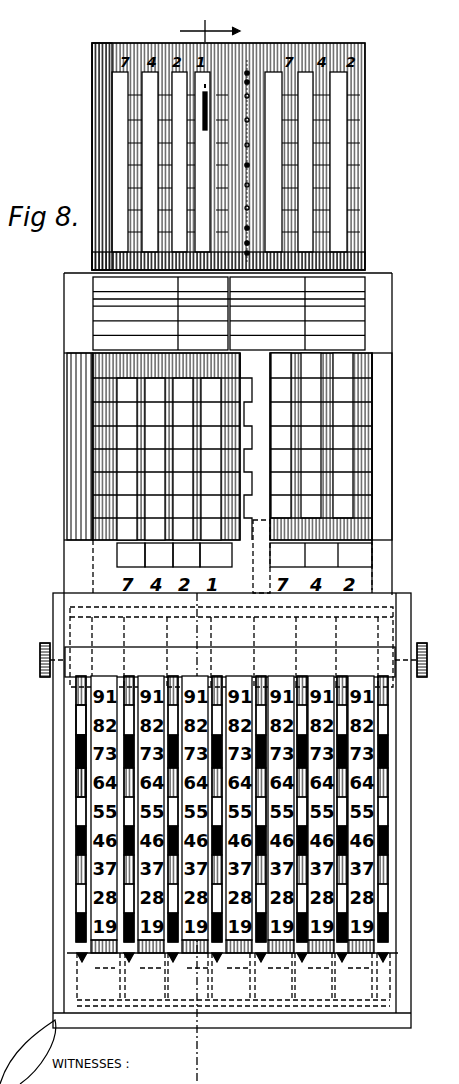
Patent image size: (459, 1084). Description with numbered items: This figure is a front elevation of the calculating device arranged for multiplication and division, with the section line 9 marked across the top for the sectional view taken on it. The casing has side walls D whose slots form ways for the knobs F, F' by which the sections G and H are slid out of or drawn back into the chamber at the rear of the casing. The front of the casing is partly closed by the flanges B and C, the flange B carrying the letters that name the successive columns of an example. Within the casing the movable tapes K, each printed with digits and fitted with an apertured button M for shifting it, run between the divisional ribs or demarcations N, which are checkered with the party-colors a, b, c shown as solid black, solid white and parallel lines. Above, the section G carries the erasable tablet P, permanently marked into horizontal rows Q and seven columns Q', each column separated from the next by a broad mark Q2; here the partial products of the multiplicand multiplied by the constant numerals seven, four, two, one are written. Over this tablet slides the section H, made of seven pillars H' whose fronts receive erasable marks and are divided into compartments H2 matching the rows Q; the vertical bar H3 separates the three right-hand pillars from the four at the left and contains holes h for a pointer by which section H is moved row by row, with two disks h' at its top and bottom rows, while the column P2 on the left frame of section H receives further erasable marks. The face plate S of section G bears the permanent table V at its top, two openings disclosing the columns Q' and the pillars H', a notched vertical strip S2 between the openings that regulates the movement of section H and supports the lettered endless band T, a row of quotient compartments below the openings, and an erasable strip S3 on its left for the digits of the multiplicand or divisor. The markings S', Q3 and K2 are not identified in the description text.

The section line 9 9 is at (210, 21).
The slide or section H is at (238, 156).
The pillars or columns H' is at (227, 160).
The compartments H2 is at (318, 176).
The vertical bar H3 is at (255, 78).
The holes or notches h is at (231, 163).
The spots or disks h' is at (223, 161).
The plate edge K2 is at (92, 106).
The column for erasable marks P2 is at (217, 250).
The permanent table V is at (355, 312).
The face plate or frame S is at (237, 643).
The slide plate S' is at (226, 446).
The vertical strip S2 is at (237, 446).
The strip of erasable material S3 is at (67, 440).
The horizontal rows Q is at (154, 450).
The columns Q' is at (131, 555).
The broad mark Q2 is at (159, 555).
The slide key 3 Q3 is at (202, 555).
The tablet P is at (366, 474).
The section G is at (392, 446).
The movable endless band T is at (253, 587).
The side walls D is at (230, 838).
The flap or flange B is at (393, 632).
The movable strips or tapes K is at (200, 684).
The finger piece or knob F is at (40, 660).
The right knob F' is at (420, 659).
The party-color a is at (77, 725).
The party-color b is at (77, 752).
The party-color c is at (77, 782).
The flap or flange C is at (382, 990).
The divisional ribs, flanges, or demarcations N is at (132, 964).
The knob, aperture, or apertured button M is at (236, 965).